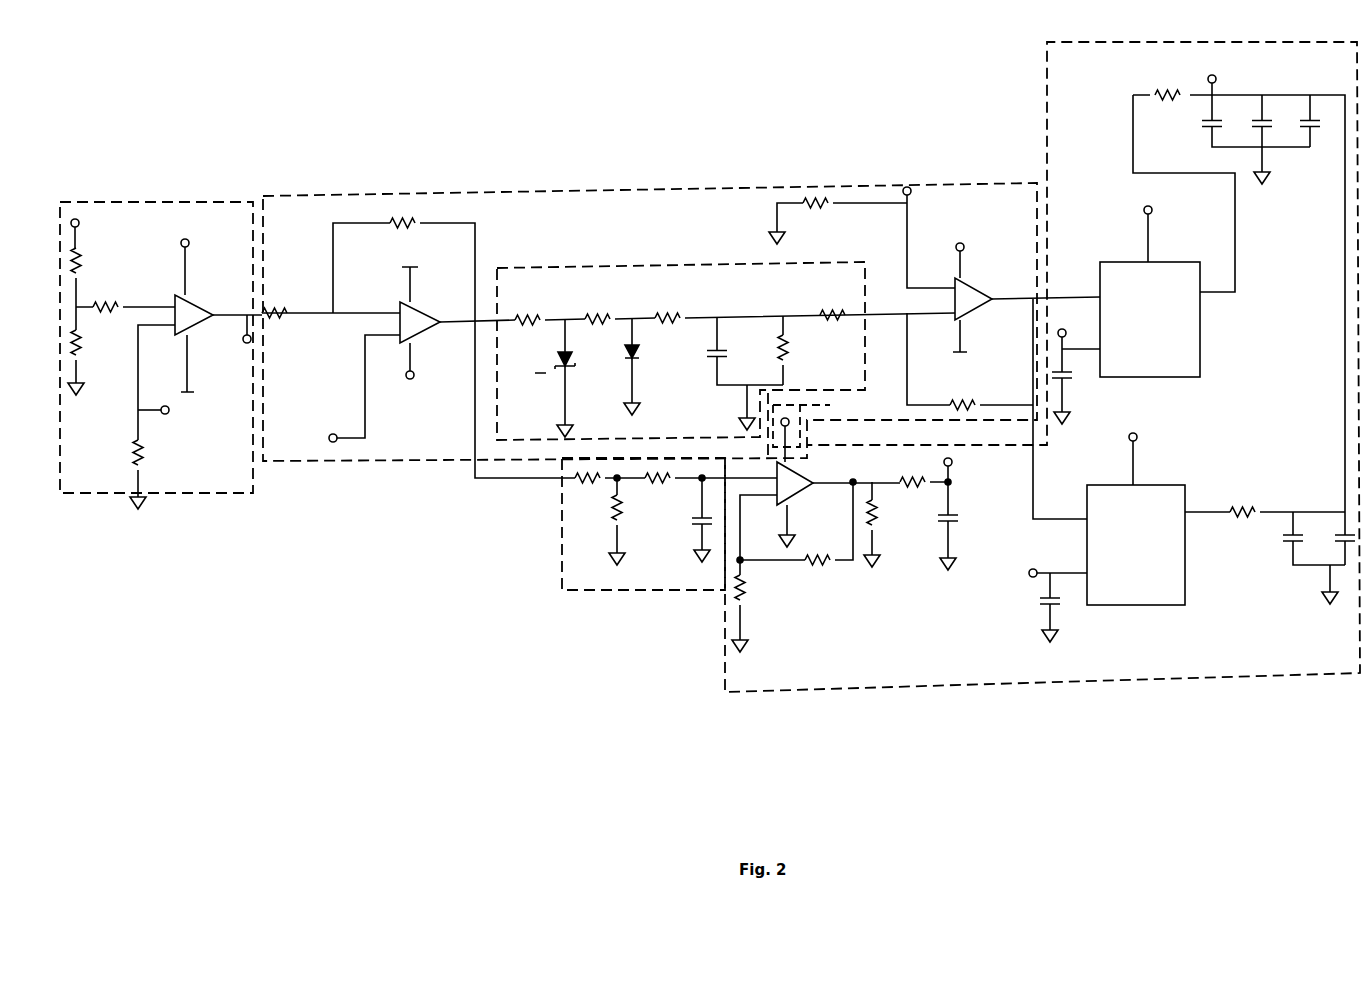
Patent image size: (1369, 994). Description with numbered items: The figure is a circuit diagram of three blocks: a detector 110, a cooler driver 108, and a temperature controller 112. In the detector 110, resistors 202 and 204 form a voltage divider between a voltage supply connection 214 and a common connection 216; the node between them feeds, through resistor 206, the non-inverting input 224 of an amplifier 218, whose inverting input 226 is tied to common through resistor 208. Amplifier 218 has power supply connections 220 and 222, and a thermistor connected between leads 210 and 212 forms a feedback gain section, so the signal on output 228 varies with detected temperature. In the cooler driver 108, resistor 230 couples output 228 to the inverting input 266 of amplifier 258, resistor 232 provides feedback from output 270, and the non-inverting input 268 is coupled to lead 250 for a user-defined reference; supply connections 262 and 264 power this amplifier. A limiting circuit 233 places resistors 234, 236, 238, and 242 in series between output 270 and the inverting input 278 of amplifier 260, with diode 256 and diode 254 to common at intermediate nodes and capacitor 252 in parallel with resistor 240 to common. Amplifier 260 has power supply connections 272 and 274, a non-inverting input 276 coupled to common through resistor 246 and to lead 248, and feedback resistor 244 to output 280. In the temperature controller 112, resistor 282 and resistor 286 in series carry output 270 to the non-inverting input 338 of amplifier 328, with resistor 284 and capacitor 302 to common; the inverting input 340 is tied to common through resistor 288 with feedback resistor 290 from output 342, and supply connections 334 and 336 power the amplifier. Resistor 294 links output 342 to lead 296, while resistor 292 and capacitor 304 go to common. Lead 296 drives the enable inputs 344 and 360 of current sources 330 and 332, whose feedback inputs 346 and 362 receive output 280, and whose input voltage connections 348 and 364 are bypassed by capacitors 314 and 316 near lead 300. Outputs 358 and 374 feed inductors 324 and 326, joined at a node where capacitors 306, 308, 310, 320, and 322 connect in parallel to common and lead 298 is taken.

The detector 110 is at (122, 202).
The cooler driver 108 is at (456, 192).
The temperature controller 112 is at (1192, 34).
The limiting circuit 233 is at (674, 262).
The voltage supply connection 214 is at (88, 221).
The resistor 202 is at (90, 270).
The resistor 204 is at (90, 345).
The resistor 206 is at (114, 298).
The resistor 208 is at (150, 446).
The lead 210 is at (244, 342).
The lead 212 is at (165, 406).
The common connection 216 is at (90, 382).
The amplifier 218 is at (192, 284).
The power supply connection 220 is at (190, 243).
The power supply connection 222 is at (192, 372).
The non-inverting input 224 is at (174, 300).
The inverting input 226 is at (172, 334).
The output 228 is at (227, 312).
The resistor 230 is at (277, 307).
The resistor 232 is at (401, 219).
The resistor 234 is at (523, 314).
The resistor 236 is at (593, 314).
The resistor 238 is at (659, 314).
The resistor 240 is at (792, 351).
The resistor 242 is at (830, 310).
The resistor 244 is at (961, 404).
The resistor 246 is at (815, 202).
The lead 248 is at (908, 181).
The lead 250 is at (332, 434).
The capacitor 252 is at (723, 344).
The diode 254 is at (634, 340).
The diode 256 is at (572, 386).
The amplifier 258 is at (419, 299).
The amplifier 260 is at (975, 285).
The supply connection 262 is at (408, 266).
The supply connection 264 is at (410, 382).
The inverting input 266 is at (397, 304).
The non-inverting input 268 is at (390, 352).
The output 270 is at (441, 321).
The power supply connection 272 is at (959, 244).
The power supply connection 274 is at (962, 345).
The non-inverting input 276 is at (908, 285).
The inverting input 278 is at (941, 316).
The output 280 is at (1001, 298).
The resistor 282 is at (591, 480).
The resistor 284 is at (624, 500).
The resistor 286 is at (662, 476).
The resistor 288 is at (754, 582).
The resistor 290 is at (820, 568).
The resistor 292 is at (877, 501).
The resistor 294 is at (912, 477).
The lead 296 is at (1154, 208).
The lead 298 is at (1214, 76).
The lead 300 is at (1061, 325).
The capacitor 302 is at (703, 516).
The capacitor 304 is at (960, 502).
The capacitor 306 is at (1214, 115).
The capacitor 308 is at (1264, 115).
The capacitor 310 is at (1311, 115).
The capacitor 314 is at (1064, 368).
The capacitor 316 is at (1049, 592).
The capacitor 320 is at (1292, 546).
The capacitor 322 is at (1347, 548).
The inductor 324 is at (1156, 90).
The inductor 326 is at (1231, 505).
The amplifier 328 is at (806, 475).
The current source 330 is at (1164, 255).
The current source 332 is at (1184, 491).
The supply connection 334 is at (802, 428).
The supply connection 336 is at (789, 525).
The non-inverting input 338 is at (774, 474).
The inverting input 340 is at (768, 512).
The output 342 is at (852, 480).
The input 344 is at (1152, 264).
The input 346 is at (1104, 286).
The input 348 is at (1104, 343).
The output 358 is at (1204, 286).
The input 360 is at (1137, 489).
The input 362 is at (1092, 511).
The input 364 is at (1092, 563).
The output 374 is at (1186, 510).